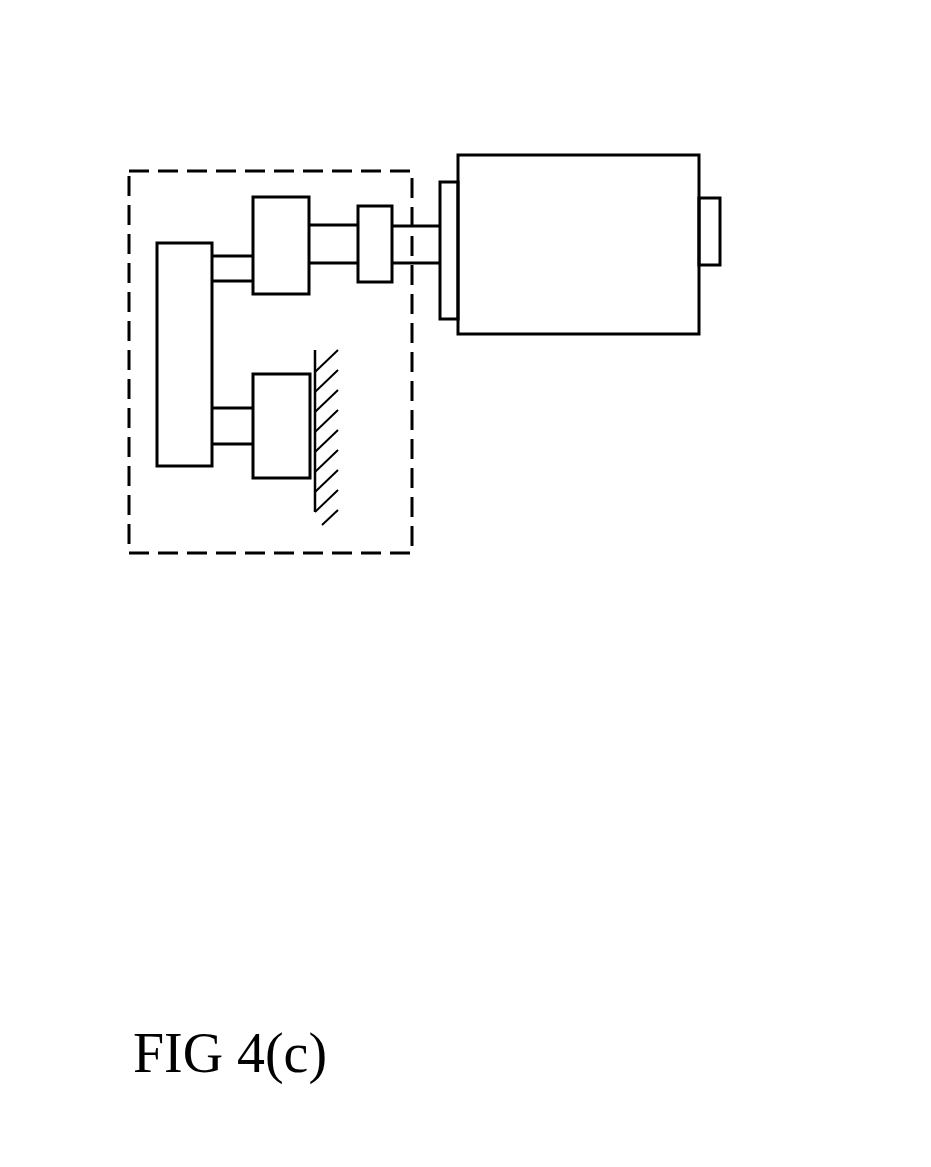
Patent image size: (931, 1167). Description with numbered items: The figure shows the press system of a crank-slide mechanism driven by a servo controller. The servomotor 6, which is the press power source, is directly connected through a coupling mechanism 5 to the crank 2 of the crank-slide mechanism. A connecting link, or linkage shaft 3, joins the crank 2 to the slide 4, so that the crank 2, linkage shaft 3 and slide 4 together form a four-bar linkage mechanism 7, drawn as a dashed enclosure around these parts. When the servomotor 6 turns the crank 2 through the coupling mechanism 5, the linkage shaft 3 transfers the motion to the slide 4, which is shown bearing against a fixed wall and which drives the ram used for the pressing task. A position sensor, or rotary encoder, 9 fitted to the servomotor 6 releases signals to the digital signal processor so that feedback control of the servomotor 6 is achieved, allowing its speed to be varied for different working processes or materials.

The crank 2 is at (282, 222).
The linkage shaft 3 is at (180, 288).
The slide 4 is at (283, 420).
The coupling mechanism 5 is at (375, 221).
The servomotor 6 is at (595, 217).
The linkage mechanism 7 is at (261, 414).
The position sensor 9 is at (722, 217).